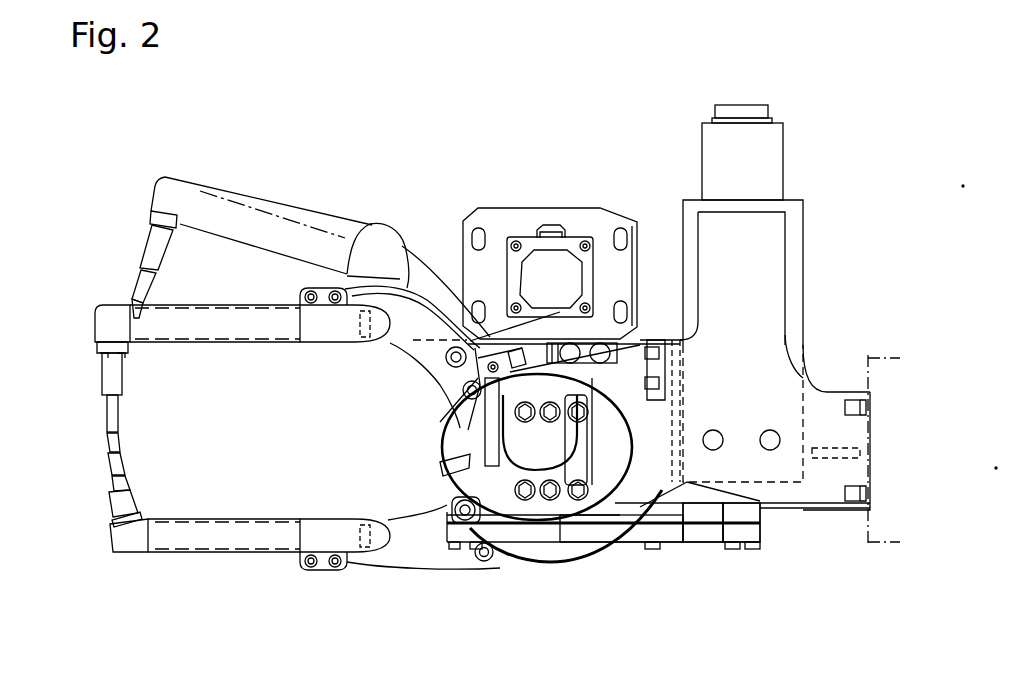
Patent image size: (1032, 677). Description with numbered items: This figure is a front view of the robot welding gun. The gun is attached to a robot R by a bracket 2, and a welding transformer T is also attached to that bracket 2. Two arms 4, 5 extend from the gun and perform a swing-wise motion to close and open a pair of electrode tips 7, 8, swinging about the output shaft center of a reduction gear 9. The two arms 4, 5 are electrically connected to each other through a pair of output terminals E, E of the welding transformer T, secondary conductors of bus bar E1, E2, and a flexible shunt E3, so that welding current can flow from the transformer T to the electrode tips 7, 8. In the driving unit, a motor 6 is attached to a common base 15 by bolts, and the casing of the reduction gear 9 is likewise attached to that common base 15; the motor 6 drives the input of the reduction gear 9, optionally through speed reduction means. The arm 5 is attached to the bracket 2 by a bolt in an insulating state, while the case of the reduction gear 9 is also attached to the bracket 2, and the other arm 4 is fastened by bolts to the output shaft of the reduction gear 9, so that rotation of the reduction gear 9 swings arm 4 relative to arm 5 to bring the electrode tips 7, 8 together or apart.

The bracket 2 is at (773, 393).
The arm 4 is at (400, 307).
The arm 5 is at (407, 552).
The motor 6 is at (516, 222).
The electrode tip 7 is at (104, 441).
The electrode tip 8 is at (104, 458).
The reduction gear 9 is at (533, 458).
The common base 15 is at (640, 333).
The welding transformer T is at (797, 243).
The output terminal E is at (762, 506).
The secondary conductor of bus bar E1 is at (723, 535).
The secondary conductor of bus bar E2 is at (667, 513).
The flexible shunt E3 is at (583, 500).
The robot R is at (887, 530).